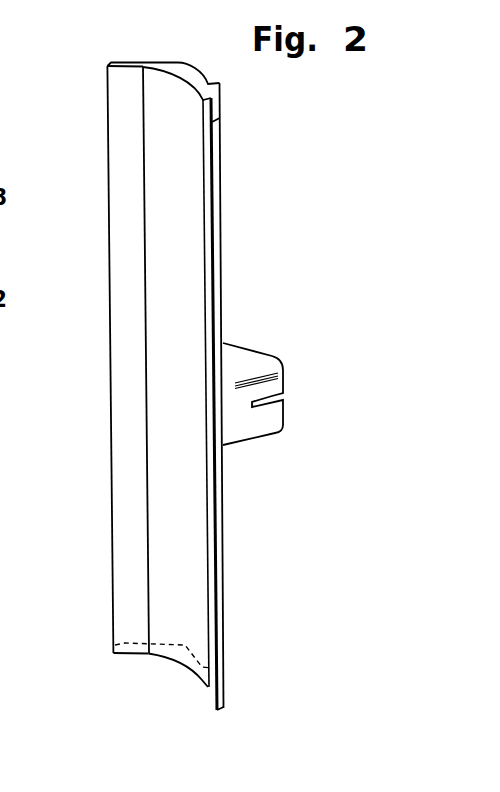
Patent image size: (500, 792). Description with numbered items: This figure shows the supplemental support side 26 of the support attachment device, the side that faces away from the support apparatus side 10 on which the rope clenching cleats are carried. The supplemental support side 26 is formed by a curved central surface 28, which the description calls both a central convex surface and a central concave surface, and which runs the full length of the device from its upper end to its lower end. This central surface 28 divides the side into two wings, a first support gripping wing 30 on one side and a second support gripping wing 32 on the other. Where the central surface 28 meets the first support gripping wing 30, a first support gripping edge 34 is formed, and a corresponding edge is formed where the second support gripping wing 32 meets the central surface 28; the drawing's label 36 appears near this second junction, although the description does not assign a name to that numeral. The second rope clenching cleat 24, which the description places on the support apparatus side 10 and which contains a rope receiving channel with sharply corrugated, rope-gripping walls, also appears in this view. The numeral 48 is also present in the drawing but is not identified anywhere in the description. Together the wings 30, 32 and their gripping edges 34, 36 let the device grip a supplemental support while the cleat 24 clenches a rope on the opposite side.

The support apparatus side 10 is at (6, 524).
The second rope clenching cleat 24 is at (238, 367).
The supplemental support side 26 is at (174, 611).
The central concave surface 28 is at (166, 102).
The first support gripping wing 30 is at (118, 63).
The second support gripping wing 32 is at (222, 129).
The first support gripping edge 34 is at (143, 105).
The edge 36 is at (200, 172).
The fastener 48 is at (0, 397).